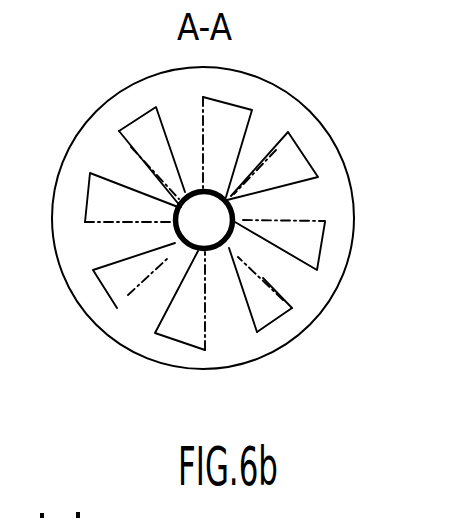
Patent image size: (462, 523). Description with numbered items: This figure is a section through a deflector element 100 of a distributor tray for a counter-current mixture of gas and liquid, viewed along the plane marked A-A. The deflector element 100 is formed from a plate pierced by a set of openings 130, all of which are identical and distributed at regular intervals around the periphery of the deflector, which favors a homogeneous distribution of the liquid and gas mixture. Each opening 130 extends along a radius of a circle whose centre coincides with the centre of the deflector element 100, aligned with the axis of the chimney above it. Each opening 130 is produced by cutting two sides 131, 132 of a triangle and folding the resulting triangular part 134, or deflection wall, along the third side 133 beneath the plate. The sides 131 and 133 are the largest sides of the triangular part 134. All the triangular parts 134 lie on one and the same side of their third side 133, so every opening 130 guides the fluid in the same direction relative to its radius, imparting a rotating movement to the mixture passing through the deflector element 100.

The deflector element 100 is at (355, 222).
The openings 130 is at (238, 245).
The first cut side of the triangle 131 is at (244, 296).
The second cut side of the triangle 132 is at (266, 318).
The third side of the triangle 133 is at (263, 279).
The triangular part 134 is at (268, 310).